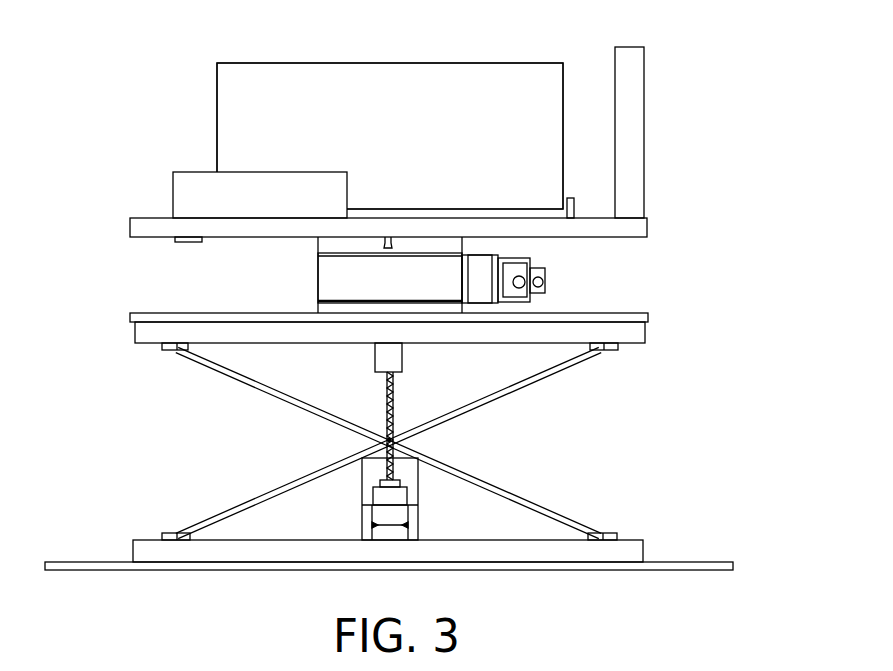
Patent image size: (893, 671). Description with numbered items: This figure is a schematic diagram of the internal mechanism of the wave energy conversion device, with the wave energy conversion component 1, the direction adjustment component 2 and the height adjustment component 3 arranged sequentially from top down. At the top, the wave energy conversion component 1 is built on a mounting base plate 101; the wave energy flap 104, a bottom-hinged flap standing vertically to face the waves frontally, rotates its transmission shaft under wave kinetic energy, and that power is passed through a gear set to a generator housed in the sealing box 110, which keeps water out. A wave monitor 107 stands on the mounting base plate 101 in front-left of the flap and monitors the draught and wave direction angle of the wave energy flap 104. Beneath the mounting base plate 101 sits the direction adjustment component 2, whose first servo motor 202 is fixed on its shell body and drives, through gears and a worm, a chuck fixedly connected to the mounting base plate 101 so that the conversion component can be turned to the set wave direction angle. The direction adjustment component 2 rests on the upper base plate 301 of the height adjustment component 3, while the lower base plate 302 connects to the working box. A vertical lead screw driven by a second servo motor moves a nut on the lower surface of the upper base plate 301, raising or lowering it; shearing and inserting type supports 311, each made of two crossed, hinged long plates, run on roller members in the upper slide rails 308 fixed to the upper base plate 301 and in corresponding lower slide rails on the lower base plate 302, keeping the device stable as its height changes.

The wave energy conversion component 1 is at (431, 55).
The wave energy flap 104 is at (262, 83).
The sealing box 110 is at (208, 200).
The wave monitor 107 is at (631, 82).
The mounting base plate 101 is at (428, 178).
The direction adjustment component 2 is at (270, 288).
The first servo motor 202 is at (545, 278).
The upper base plate 301 is at (452, 346).
The upper slide rail 308 is at (610, 346).
The height adjustment component 3 is at (515, 448).
The shearing and inserting type support 311 is at (218, 362).
The lower base plate 302 is at (413, 523).